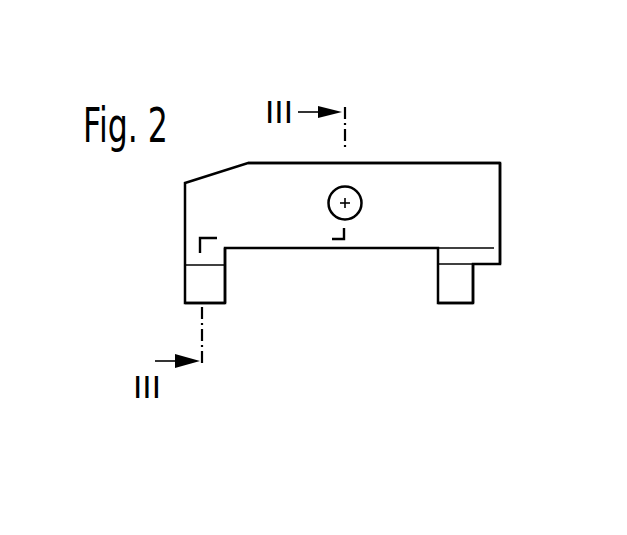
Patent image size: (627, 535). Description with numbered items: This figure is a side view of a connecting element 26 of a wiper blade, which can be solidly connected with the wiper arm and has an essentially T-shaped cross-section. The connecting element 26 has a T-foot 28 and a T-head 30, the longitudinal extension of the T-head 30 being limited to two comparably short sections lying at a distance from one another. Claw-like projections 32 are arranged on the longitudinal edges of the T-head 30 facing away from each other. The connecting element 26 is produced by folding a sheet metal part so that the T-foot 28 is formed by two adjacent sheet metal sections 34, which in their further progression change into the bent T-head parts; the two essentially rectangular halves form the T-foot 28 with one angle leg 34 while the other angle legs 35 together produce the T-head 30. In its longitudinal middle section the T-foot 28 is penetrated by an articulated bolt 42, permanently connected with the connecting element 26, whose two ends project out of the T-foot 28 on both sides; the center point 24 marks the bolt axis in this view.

The center point 24 is at (348, 208).
The connecting element 26 is at (449, 162).
The T-foot 28 is at (504, 187).
The T-head 30 is at (230, 280).
The claw-like projections 32 is at (190, 306).
The sheet metal sections 34 is at (488, 212).
The angle legs 35 is at (193, 257).
The articulated bolt 42 is at (355, 192).